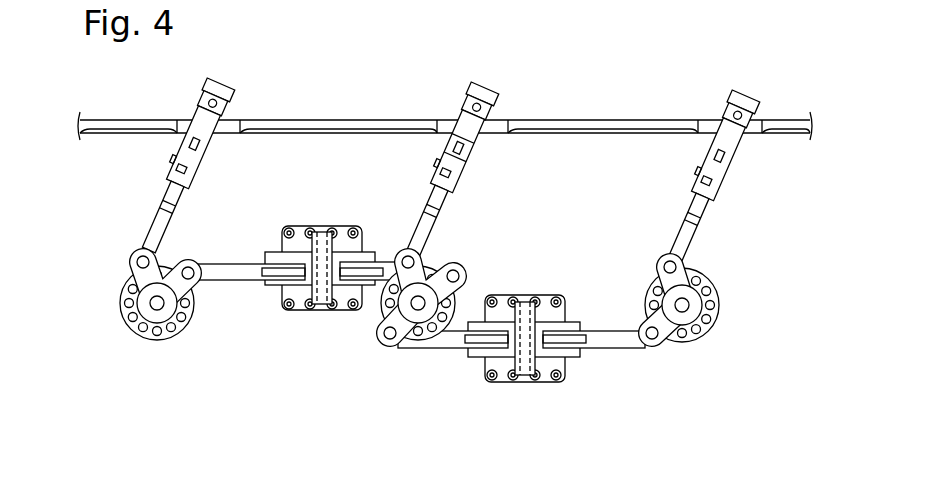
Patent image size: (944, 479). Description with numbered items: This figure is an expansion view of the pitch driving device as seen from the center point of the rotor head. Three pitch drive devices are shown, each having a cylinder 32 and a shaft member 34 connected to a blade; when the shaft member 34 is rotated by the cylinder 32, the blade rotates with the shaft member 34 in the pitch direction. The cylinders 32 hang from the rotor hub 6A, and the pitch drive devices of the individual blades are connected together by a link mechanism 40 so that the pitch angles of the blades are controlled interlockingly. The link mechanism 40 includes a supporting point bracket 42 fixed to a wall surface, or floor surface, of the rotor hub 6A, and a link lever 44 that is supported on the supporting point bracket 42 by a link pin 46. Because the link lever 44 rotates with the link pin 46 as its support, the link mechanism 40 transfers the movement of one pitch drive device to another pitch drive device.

The rotor hub 6A is at (628, 119).
The cylinder 32 is at (183, 151).
The shaft member 34 is at (122, 333).
The link mechanism 40 is at (420, 300).
The supporting point bracket 42 is at (302, 312).
The link lever 44 is at (365, 312).
The link pin 46 is at (303, 226).